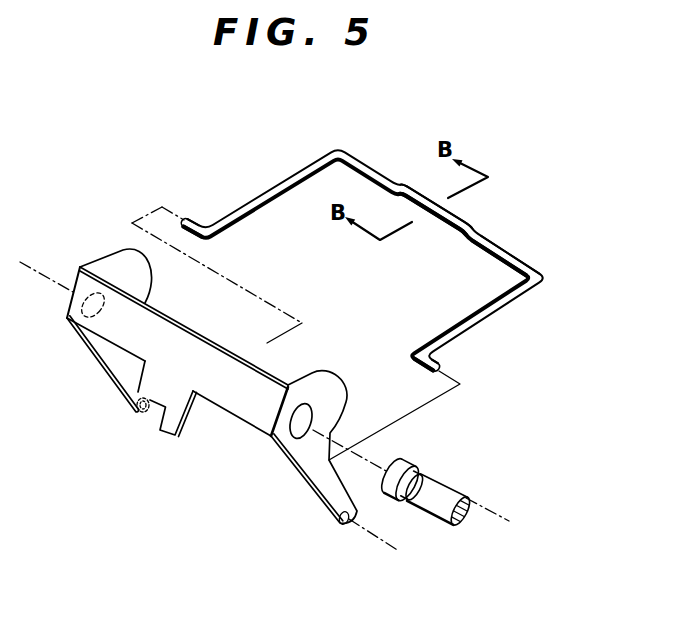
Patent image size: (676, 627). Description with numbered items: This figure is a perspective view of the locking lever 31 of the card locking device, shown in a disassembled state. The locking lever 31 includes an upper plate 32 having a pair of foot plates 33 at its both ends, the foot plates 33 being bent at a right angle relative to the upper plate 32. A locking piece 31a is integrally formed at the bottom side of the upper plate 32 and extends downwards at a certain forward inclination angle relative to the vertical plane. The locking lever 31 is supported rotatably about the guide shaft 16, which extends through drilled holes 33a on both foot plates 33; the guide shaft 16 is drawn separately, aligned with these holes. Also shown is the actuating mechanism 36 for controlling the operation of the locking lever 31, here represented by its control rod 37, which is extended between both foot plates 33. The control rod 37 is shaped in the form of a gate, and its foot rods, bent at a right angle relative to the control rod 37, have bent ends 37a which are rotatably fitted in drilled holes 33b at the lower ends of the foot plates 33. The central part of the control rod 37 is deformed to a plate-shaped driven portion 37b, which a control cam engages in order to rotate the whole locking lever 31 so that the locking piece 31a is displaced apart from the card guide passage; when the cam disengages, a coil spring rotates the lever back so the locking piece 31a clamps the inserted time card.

The guide shaft 16 is at (445, 488).
The locking lever 31 is at (222, 409).
The locking piece 31a is at (168, 436).
The upper plate 32 is at (172, 333).
The foot plates 33 is at (222, 409).
The drilled holes 33a is at (100, 300).
The drilled holes 33b is at (135, 414).
The actuating mechanism 36 is at (379, 225).
The control rod 37 is at (510, 262).
The bent ends 37a is at (190, 216).
The driven portion 37b is at (466, 212).